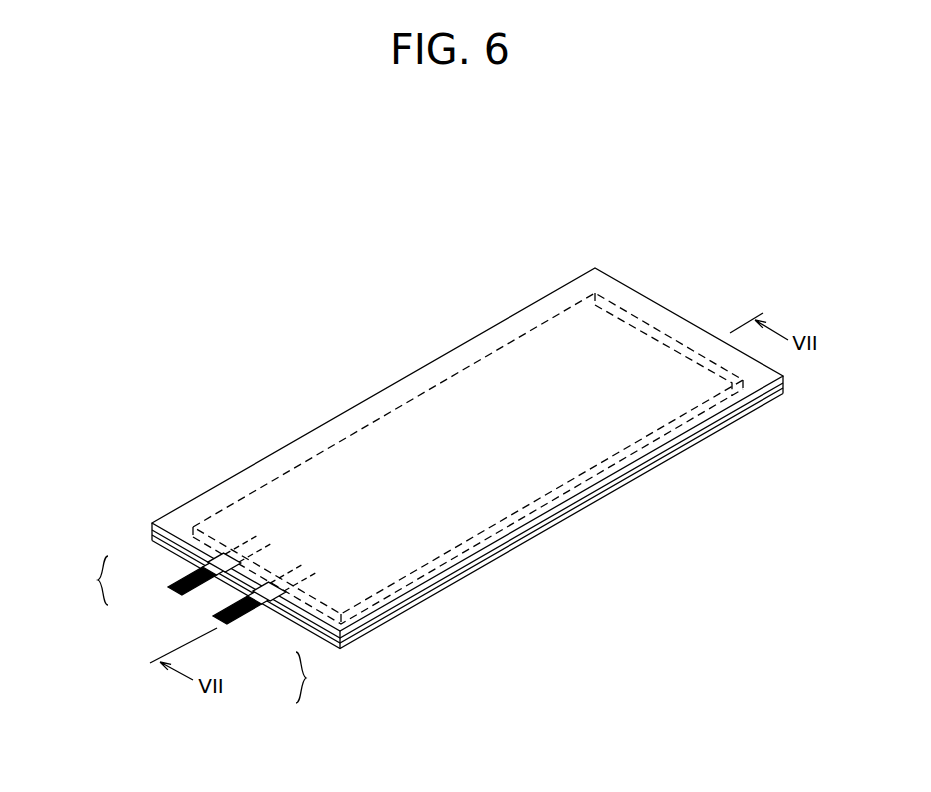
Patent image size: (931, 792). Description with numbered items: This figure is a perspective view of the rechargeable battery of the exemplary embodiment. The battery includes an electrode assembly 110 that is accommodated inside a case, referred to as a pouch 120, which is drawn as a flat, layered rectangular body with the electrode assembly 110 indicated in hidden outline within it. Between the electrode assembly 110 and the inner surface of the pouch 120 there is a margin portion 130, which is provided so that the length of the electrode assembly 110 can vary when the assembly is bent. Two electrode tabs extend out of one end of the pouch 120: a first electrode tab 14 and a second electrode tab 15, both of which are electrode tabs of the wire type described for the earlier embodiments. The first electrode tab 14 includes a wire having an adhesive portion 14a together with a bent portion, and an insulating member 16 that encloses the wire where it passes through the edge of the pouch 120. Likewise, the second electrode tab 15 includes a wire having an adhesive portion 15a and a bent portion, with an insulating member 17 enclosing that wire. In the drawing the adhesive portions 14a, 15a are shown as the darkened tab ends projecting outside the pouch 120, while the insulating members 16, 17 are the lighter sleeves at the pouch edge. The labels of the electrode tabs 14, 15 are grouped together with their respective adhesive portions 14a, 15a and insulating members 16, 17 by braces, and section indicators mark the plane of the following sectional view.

The electrode assembly 110 is at (412, 398).
The pouch 120 is at (522, 309).
The margin portion 130 is at (615, 312).
The first electrode tab 14 is at (312, 677).
The adhesive portion 14a is at (233, 620).
The insulating member 16 is at (252, 608).
The second electrode tab 15 is at (92, 580).
The adhesive portion 15a is at (168, 589).
The insulating member 17 is at (214, 565).